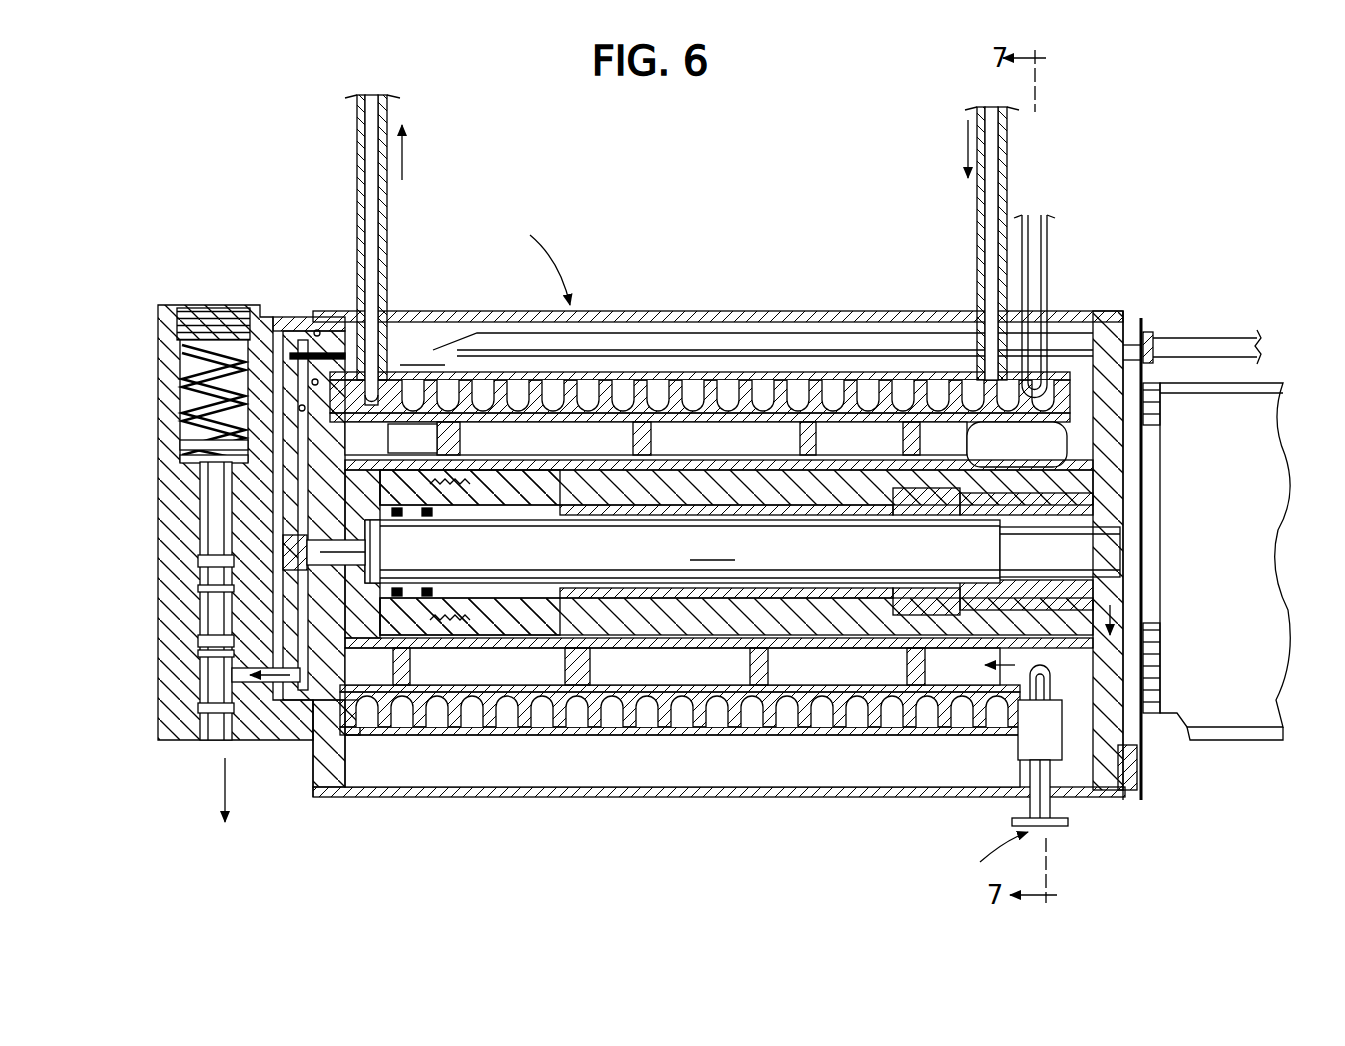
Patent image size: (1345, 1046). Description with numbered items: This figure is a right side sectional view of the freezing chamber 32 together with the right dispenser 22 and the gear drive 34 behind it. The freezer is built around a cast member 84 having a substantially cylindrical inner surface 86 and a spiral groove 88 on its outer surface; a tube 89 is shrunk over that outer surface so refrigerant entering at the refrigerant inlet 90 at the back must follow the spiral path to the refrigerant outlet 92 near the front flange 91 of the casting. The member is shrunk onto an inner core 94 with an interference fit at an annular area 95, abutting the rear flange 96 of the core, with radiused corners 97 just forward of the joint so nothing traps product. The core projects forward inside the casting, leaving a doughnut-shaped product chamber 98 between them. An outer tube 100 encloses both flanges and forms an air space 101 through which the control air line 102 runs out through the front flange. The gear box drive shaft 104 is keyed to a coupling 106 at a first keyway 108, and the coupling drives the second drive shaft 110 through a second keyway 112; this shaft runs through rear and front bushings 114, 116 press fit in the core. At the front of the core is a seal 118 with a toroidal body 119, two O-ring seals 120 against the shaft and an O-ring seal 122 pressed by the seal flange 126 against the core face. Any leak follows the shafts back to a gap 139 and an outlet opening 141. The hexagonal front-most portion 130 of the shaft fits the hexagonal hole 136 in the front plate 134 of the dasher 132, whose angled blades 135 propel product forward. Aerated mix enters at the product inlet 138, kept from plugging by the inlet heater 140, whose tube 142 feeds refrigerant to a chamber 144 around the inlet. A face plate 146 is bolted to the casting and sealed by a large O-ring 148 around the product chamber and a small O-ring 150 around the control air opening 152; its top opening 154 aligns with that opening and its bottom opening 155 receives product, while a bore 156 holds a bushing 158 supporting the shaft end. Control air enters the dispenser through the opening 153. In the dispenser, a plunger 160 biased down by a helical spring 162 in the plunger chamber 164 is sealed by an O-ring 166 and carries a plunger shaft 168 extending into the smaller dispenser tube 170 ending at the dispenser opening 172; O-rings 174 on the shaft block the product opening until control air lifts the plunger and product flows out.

The right dispenser 22 is at (175, 315).
The freezing chamber 32 is at (535, 259).
The gear drive 34 is at (1265, 415).
The member 84 is at (590, 715).
The cylindrical inner surface 86 is at (685, 680).
The spiral groove 88 is at (615, 718).
The tube 89 is at (742, 700).
The refrigerant inlet 90 is at (975, 307).
The front flange 91 is at (318, 787).
The refrigerant outlet 92 is at (397, 307).
The inner core 94 is at (655, 480).
The annular area 95 is at (1153, 338).
The rear flange 96 is at (1128, 322).
The radiused corners 97 is at (1060, 445).
The product chamber 98 is at (722, 430).
The outer tube 100 is at (905, 311).
The air space 101 is at (805, 333).
The control air line 102 is at (680, 333).
The drive shaft 104 is at (1100, 545).
The coupling 106 is at (1085, 595).
The first keyway 108 is at (1100, 504).
The second drive shaft 110 is at (682, 551).
The second keyway 112 is at (955, 588).
The rear bushing 114 is at (845, 515).
The front bushing 116 is at (545, 505).
The seal 118 is at (445, 505).
The toroidal body 119 is at (490, 598).
The O-ring seals 120 is at (415, 590).
The O-ring seal 122 is at (380, 505).
The seal flange 126 is at (455, 650).
The front-most portion 130 is at (365, 625).
The dasher 132 is at (563, 432).
The front plate 134 is at (357, 437).
The angled blades 135 is at (903, 437).
The hexagonal cross-section hole 136 is at (283, 545).
The product inlet 138 is at (1052, 826).
The gap 139 is at (1125, 745).
The inlet heater 140 is at (1018, 800).
The outlet opening 141 is at (1130, 800).
The tube 142 is at (1048, 275).
The chamber 144 is at (1022, 737).
The face plate 146 is at (300, 720).
The O-ring seal 148 is at (345, 735).
The O-ring seal 150 is at (317, 330).
The control air opening 152 is at (315, 379).
The opening 153 is at (215, 500).
The top opening 154 is at (300, 405).
The bottom opening 155 is at (255, 680).
The bore 156 is at (225, 635).
The bushing 158 is at (215, 575).
The plunger 160 is at (180, 447).
The helical spring 162 is at (180, 335).
The plunger chamber 164 is at (195, 400).
The O-ring 166 is at (180, 462).
The plunger shaft 168 is at (213, 520).
The dispenser tube 170 is at (240, 742).
The dispenser opening 172 is at (213, 740).
The O-rings 174 is at (210, 590).